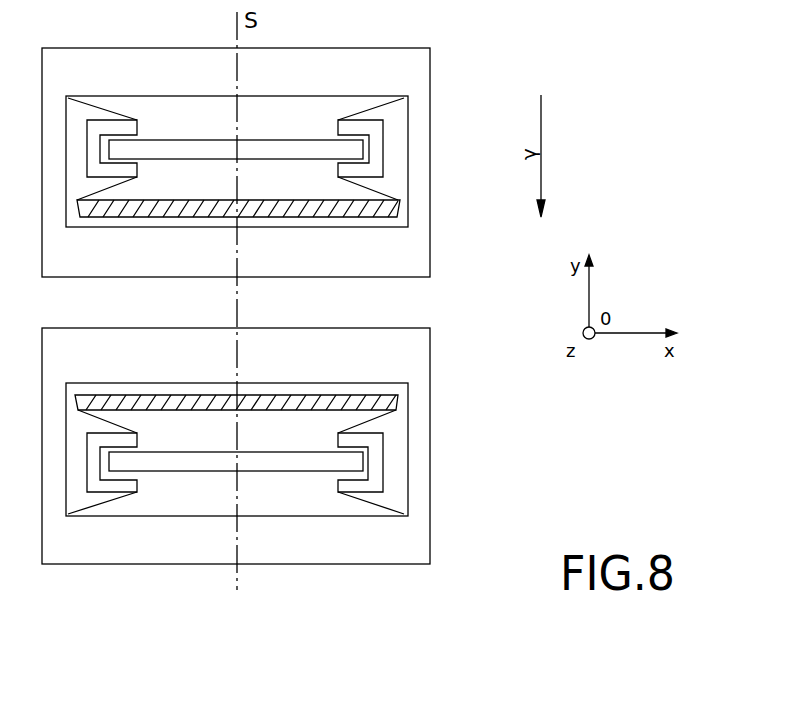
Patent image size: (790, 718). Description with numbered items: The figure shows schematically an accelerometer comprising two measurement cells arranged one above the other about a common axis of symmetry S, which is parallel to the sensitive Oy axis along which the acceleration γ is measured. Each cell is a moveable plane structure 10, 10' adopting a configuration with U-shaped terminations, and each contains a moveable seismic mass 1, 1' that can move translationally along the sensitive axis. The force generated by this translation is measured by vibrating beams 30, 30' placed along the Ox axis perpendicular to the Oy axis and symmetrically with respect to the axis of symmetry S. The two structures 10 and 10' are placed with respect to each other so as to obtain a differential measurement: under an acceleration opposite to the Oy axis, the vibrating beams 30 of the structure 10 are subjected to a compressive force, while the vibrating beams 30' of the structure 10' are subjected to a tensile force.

The moveable seismic mass 1 is at (266, 174).
The moveable plane structure 10 is at (258, 162).
The vibrating beams 30 is at (236, 109).
The moveable seismic mass 1' is at (271, 461).
The moveable plane structure 10' is at (262, 446).
The vibrating beams 30' is at (244, 405).